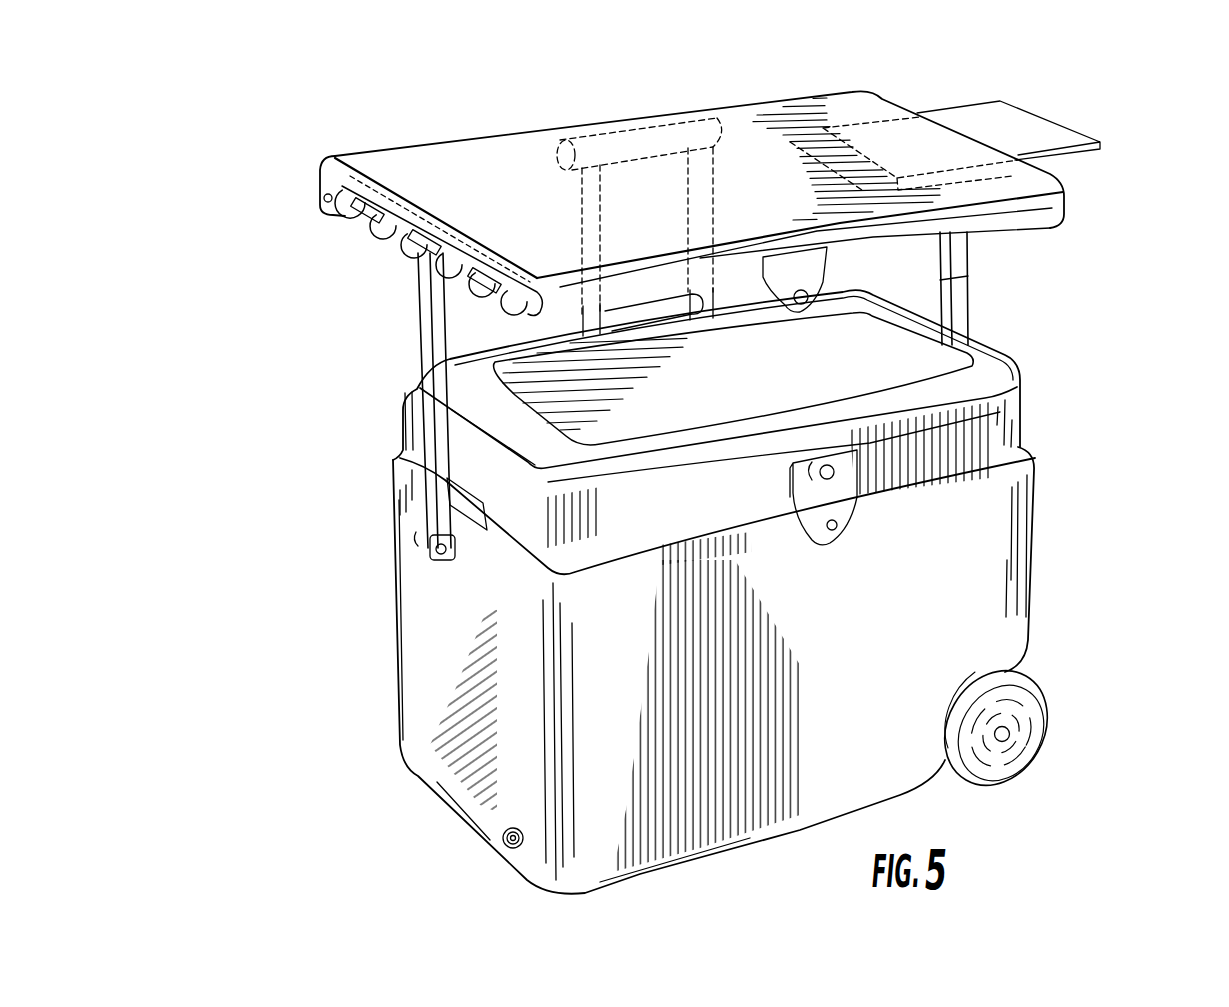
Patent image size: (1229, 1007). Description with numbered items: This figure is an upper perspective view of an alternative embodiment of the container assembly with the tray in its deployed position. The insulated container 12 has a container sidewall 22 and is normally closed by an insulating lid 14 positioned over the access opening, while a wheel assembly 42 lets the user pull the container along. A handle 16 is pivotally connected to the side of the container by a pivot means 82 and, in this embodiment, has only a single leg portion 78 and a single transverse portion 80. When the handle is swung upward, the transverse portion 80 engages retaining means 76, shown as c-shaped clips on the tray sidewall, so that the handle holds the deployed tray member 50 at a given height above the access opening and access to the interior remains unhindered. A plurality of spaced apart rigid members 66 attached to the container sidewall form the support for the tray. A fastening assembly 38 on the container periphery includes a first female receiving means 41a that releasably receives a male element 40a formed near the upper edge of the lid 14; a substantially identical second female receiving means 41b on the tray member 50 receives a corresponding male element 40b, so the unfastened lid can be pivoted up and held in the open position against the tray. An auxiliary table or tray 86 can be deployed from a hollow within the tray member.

The insulated container 12 is at (1063, 489).
The insulating lid 14 is at (786, 396).
The handle 16 is at (387, 333).
The body 22 is at (430, 687).
The fastening assembly 38 is at (874, 517).
The male element 40a is at (835, 543).
The latch pin 40b is at (820, 467).
The female receiving means 41a is at (818, 515).
The second female receiving means 41b is at (943, 285).
The wheel assembly 42 is at (1047, 692).
The tray member 50 is at (409, 125).
The rigid members 66 is at (593, 317).
The retaining means 76 is at (367, 217).
The leg portion 78 is at (413, 366).
The transverse portion 80 is at (383, 237).
The pivot bracket 82 is at (443, 563).
The auxiliary table or tray 86 is at (1047, 138).